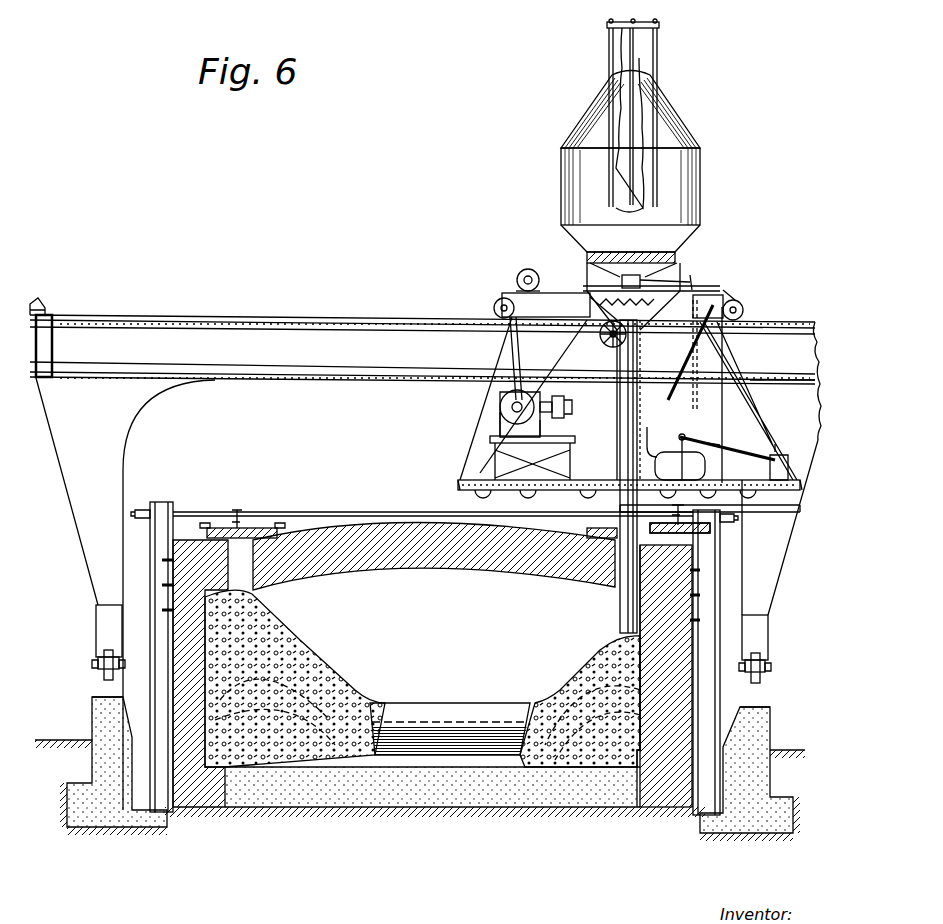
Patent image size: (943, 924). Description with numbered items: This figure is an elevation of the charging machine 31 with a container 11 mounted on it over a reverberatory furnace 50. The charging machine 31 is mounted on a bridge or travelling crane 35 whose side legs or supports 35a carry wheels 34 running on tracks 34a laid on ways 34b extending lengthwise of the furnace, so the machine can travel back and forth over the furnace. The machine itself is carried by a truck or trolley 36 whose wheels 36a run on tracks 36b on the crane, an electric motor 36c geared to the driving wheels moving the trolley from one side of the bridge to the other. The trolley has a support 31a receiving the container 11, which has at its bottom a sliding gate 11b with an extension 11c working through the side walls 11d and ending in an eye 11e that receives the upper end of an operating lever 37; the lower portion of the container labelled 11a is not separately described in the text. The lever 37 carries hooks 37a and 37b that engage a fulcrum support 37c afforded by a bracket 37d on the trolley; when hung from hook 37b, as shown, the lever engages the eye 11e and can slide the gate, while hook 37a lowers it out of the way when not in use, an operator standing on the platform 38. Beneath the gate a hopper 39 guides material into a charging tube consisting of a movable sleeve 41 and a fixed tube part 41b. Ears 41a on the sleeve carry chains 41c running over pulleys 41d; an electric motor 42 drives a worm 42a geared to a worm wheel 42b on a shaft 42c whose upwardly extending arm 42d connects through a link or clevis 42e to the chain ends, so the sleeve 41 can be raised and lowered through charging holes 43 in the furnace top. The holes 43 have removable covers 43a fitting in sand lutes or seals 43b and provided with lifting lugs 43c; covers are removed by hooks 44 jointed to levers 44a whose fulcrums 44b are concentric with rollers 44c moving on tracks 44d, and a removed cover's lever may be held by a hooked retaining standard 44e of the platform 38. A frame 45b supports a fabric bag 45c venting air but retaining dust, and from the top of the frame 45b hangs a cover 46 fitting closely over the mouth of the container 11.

The container 11 is at (685, 122).
The hopper discharge funnel 11a is at (648, 255).
The sliding gate 11b is at (660, 285).
The extension 11c is at (690, 282).
The side walls 11d is at (670, 255).
The opening or eye 11e is at (700, 283).
The charging machine 31 is at (630, 466).
The support 31a is at (587, 291).
The wheels 34 is at (100, 685).
The tracks 34a is at (92, 696).
The ways 34b is at (96, 722).
The bridge or travelling crane 35 is at (806, 332).
The side legs or supports 35a is at (78, 540).
The truck or trolley 36 is at (705, 305).
The wheels 36a is at (495, 300).
The tracks 36b is at (398, 322).
The electric motor 36c is at (525, 268).
The operating lever 37 is at (715, 292).
The hook 37a is at (688, 340).
The hook 37b is at (690, 350).
The fulcrum support 37c is at (740, 350).
The bracket 37d is at (740, 318).
The platform 38 is at (752, 508).
The hopper 39 is at (600, 340).
The movable sleeve 41 is at (620, 612).
The ears 41a is at (615, 490).
The fixed portion or tube part 41b is at (620, 404).
The chains 41c is at (625, 430).
The pulleys 41d is at (615, 340).
The electric motor 42 is at (531, 413).
The worm 42a is at (490, 432).
The worm wheel 42b is at (505, 398).
The shaft 42c is at (500, 410).
The arm 42d is at (515, 365).
The link or clevis 42e is at (575, 330).
The charging holes 43 is at (245, 580).
The covers 43a is at (262, 528).
The sand lutes or seals 43b is at (278, 530).
The lifting lugs 43c is at (238, 510).
The hooks 44 is at (727, 445).
The levers 44a is at (770, 420).
The fulcrums 44b is at (686, 447).
The rollers 44c is at (700, 440).
The tracks 44d is at (666, 430).
The hooked retaining standard 44e is at (785, 452).
The frame 45b is at (609, 104).
The fabric bag 45c is at (645, 170).
The cover 46 is at (645, 75).
The reverberatory furnace 50 is at (435, 708).